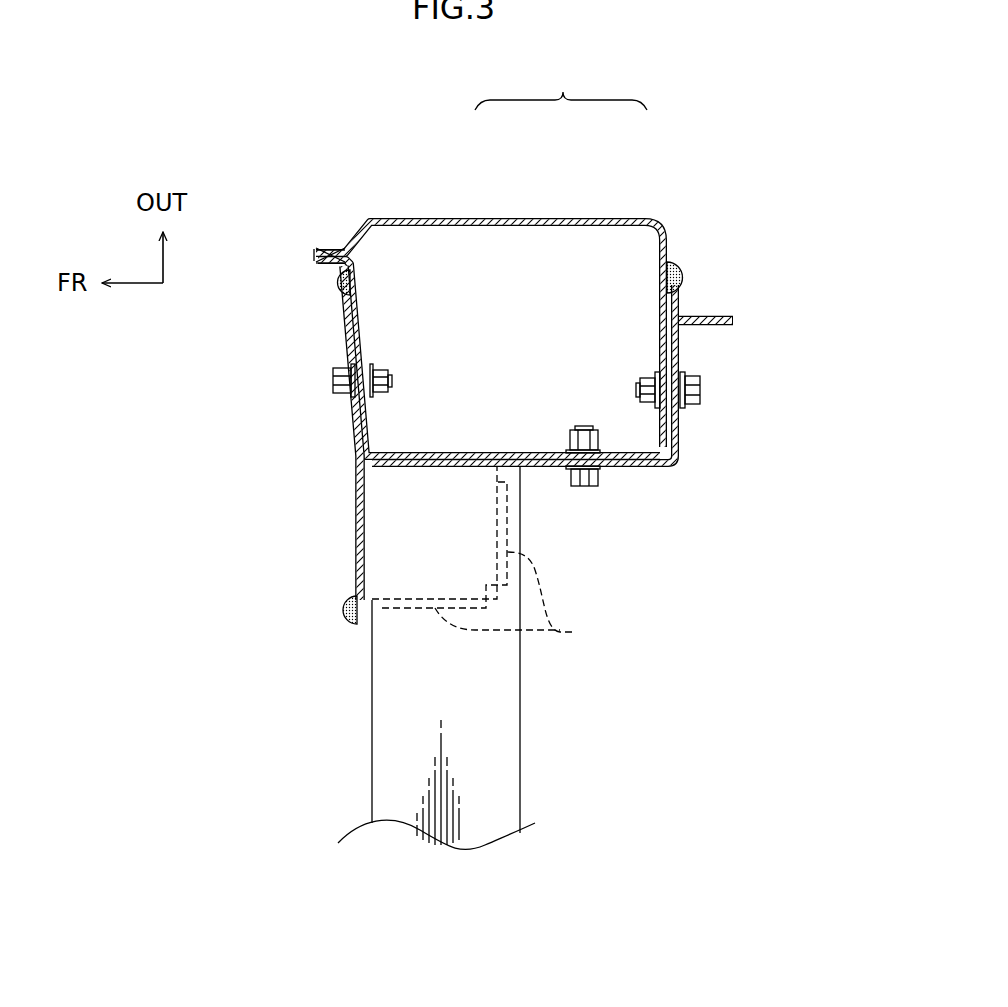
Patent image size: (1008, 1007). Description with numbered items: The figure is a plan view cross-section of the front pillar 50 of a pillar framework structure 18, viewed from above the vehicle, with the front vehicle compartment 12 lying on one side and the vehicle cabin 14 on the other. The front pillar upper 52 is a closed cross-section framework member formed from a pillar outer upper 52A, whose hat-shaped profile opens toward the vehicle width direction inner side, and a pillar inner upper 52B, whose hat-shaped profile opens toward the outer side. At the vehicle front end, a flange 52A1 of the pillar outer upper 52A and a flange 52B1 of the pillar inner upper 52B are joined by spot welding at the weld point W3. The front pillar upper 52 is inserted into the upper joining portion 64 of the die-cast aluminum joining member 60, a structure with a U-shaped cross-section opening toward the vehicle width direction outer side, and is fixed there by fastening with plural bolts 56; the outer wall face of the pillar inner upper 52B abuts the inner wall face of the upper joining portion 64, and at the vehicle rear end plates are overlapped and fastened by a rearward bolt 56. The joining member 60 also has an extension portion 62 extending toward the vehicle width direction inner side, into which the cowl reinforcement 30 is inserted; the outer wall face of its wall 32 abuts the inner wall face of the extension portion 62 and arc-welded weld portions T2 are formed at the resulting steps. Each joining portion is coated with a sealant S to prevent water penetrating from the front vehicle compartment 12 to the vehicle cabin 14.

The front vehicle compartment 12 is at (238, 714).
The vehicle cabin 14 is at (700, 714).
The pillar framework structure 18 is at (809, 212).
The cowl reinforcement 30 is at (480, 658).
The wall 32 is at (495, 757).
The front pillar 50 is at (753, 236).
The front pillar upper 52 is at (561, 86).
The pillar outer upper 52A is at (487, 216).
The pillar inner upper 52B is at (527, 449).
The flange 52A1 is at (318, 250).
The flange 52B1 is at (320, 262).
The bolt 56 is at (333, 380).
The joining member 60 is at (586, 428).
The extension portion 62 is at (372, 541).
The upper joining portion 64 is at (645, 456).
The sealant S is at (344, 283).
The weld portion T2 is at (360, 611).
The weld point W3 is at (327, 250).